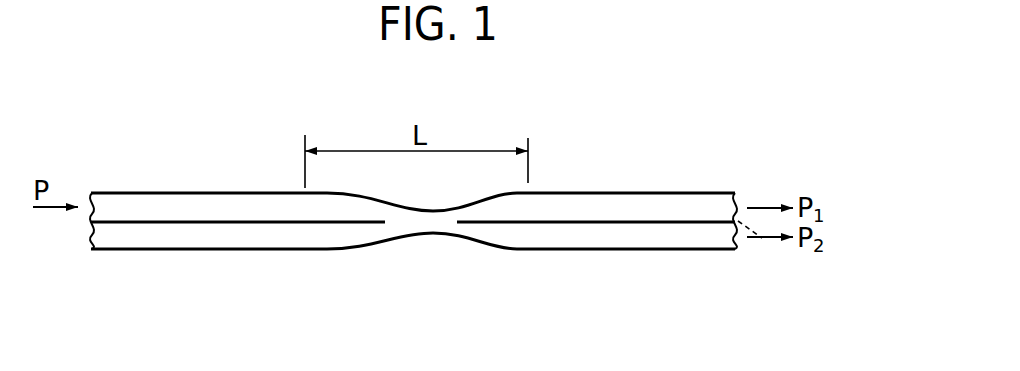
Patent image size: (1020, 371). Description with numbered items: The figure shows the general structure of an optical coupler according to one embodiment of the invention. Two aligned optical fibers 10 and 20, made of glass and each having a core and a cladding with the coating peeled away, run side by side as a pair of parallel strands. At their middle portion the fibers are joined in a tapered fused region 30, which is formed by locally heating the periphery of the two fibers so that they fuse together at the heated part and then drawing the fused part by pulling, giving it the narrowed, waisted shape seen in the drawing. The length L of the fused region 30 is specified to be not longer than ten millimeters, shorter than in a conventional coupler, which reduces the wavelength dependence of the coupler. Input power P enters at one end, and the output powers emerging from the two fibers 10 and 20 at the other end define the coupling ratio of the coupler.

The optical fiber 10 is at (669, 207).
The optical fiber 20 is at (678, 237).
The tapered fused region 30 is at (520, 262).